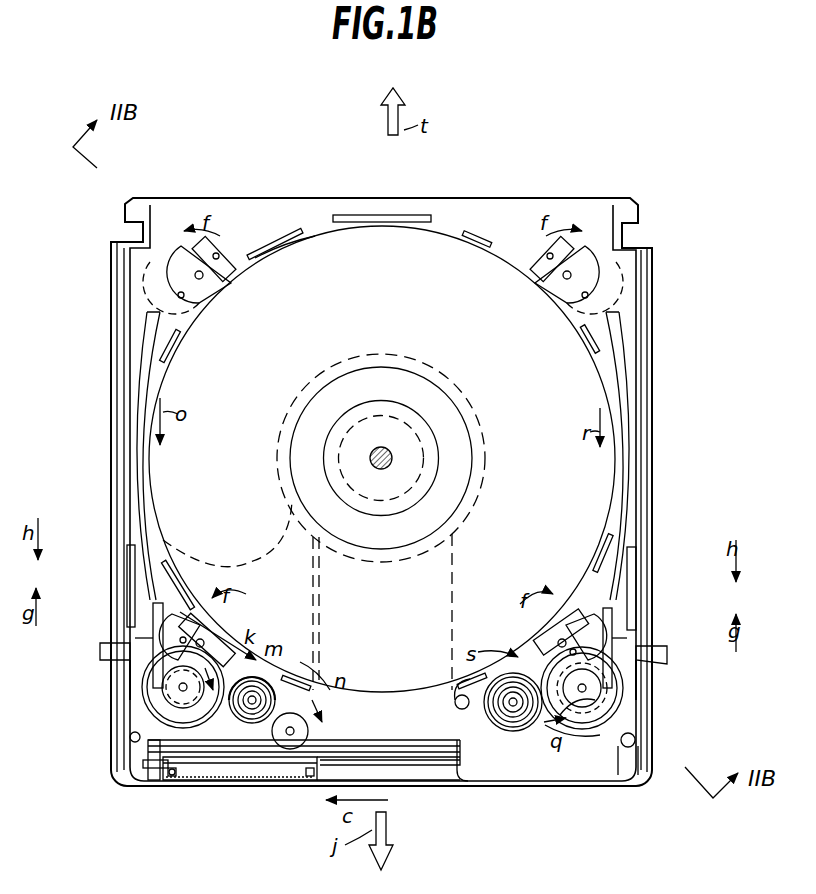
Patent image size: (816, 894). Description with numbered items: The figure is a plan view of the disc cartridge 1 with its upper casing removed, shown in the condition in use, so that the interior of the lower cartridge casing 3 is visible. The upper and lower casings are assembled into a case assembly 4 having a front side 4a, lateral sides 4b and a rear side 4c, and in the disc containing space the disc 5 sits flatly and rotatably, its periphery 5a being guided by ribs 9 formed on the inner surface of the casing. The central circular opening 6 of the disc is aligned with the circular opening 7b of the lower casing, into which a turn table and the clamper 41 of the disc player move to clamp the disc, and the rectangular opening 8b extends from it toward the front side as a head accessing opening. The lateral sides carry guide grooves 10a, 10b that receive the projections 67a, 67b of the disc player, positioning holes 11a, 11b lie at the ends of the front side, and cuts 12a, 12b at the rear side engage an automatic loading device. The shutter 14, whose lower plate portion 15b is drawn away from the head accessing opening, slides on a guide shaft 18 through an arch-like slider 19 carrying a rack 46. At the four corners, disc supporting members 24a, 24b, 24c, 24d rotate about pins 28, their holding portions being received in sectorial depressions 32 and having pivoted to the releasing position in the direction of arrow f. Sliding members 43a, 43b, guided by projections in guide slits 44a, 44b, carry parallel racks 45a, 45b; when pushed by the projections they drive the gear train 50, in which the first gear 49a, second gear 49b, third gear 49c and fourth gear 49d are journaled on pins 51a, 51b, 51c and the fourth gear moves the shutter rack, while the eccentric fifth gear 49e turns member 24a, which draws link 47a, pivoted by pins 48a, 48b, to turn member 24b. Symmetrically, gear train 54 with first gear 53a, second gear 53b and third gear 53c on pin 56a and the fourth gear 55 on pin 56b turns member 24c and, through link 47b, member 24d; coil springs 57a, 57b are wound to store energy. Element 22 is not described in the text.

The disc cartridge 1 is at (668, 248).
The lower cartridge casing 3 is at (518, 198).
The case assembly 4 is at (418, 213).
The front side 4a is at (426, 783).
The lateral side 4b is at (105, 497).
The rear side 4c is at (339, 196).
The disc 5 is at (352, 245).
The periphery 5a is at (302, 240).
The central circular opening 6 is at (414, 438).
The circular opening 7b is at (470, 408).
The rectangular opening 8b is at (450, 582).
The ribs 9 is at (268, 242).
The guide groove 10a is at (115, 475).
The guide groove 10b is at (649, 475).
The positioning hole 11a is at (131, 742).
The positioning hole 11b is at (634, 746).
The cut 12a is at (128, 230).
The cut 12b is at (636, 230).
The shutter 14 is at (234, 783).
The lower plate portion 15b is at (285, 536).
The guide shaft 18 is at (446, 770).
The slider 19 is at (162, 764).
The projections 22 is at (172, 778).
The disc supporting member 24a is at (205, 620).
The disc supporting member 24b is at (230, 284).
The disc supporting member 24c is at (556, 588).
The disc supporting member 24d is at (530, 277).
The pin 28 is at (212, 297).
The sectorial depression 32 is at (216, 254).
The clamper 41 is at (462, 446).
The sliding member 43a is at (127, 560).
The sliding member 43b is at (636, 582).
The guide slit 44a is at (128, 668).
The guide slit 44b is at (640, 680).
The rack 45a is at (155, 610).
The rack 45b is at (613, 620).
The rack 46 is at (268, 722).
The link 47a is at (137, 446).
The link 47b is at (630, 448).
The pin 48a is at (150, 668).
The pin 48b is at (179, 294).
The first gear 49a is at (172, 705).
The second gear 49b is at (222, 766).
The third gear 49c is at (255, 716).
The fourth gear 49d is at (294, 730).
The fifth gear 49e is at (145, 770).
The gear train 50 is at (180, 690).
The pin 51a is at (168, 692).
The pin 51b is at (252, 724).
The pin 51c is at (332, 768).
The first gear 53a is at (598, 700).
The second gear 53b is at (582, 722).
The third gear 53c is at (614, 742).
The gear train 54 is at (596, 740).
The fourth gear 55 is at (522, 730).
The pin 56a is at (586, 690).
The pin 56b is at (512, 706).
The coil spring 57a is at (326, 662).
The coil spring 57b is at (456, 704).
The projection 67a is at (100, 652).
The projection 67b is at (668, 660).